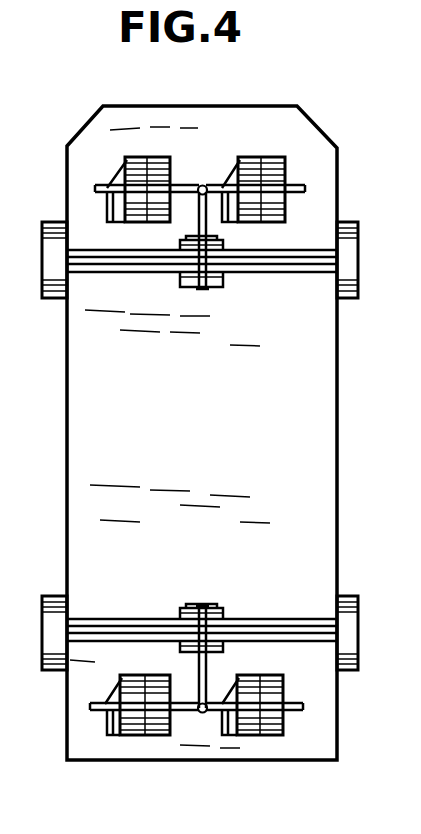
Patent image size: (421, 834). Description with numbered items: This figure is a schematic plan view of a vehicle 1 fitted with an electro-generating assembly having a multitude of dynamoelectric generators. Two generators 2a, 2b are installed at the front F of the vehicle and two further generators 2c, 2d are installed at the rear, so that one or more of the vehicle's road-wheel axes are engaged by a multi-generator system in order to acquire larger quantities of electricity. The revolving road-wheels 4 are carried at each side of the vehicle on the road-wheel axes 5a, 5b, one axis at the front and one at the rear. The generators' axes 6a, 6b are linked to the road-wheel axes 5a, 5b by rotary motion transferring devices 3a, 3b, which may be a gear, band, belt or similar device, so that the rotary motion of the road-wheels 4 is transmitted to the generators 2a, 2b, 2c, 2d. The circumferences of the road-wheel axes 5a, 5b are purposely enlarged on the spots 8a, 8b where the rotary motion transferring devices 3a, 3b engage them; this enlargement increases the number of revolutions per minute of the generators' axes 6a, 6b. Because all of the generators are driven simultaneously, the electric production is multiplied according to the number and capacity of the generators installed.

The skateboard deck 1 is at (210, 430).
The front of the vehicle F is at (121, 106).
The dynamoelectric generator 2a is at (136, 157).
The dynamoelectric generator 2b is at (278, 157).
The dynamoelectric generator 2c is at (124, 736).
The dynamoelectric generator 2d is at (276, 735).
The rotary motion transferring device 3a is at (208, 228).
The rotary motion transferring device 3b is at (196, 684).
The road-wheel 4 is at (54, 300).
The road-wheel axis 5a is at (302, 274).
The road-wheel axis 5b is at (304, 619).
The generator axis 6a is at (210, 183).
The generator axis 6b is at (212, 688).
The enlarged spot 8a is at (180, 280).
The enlarged spot 8b is at (216, 590).